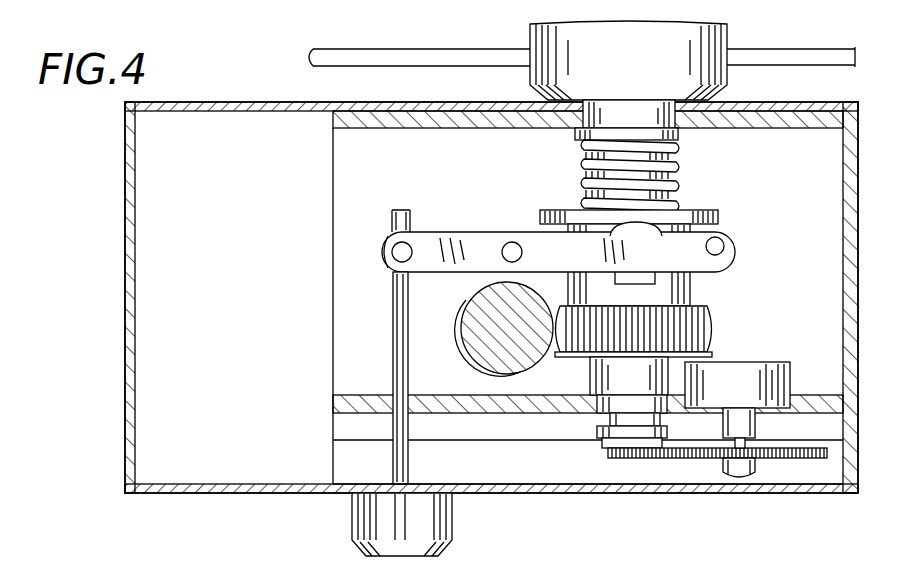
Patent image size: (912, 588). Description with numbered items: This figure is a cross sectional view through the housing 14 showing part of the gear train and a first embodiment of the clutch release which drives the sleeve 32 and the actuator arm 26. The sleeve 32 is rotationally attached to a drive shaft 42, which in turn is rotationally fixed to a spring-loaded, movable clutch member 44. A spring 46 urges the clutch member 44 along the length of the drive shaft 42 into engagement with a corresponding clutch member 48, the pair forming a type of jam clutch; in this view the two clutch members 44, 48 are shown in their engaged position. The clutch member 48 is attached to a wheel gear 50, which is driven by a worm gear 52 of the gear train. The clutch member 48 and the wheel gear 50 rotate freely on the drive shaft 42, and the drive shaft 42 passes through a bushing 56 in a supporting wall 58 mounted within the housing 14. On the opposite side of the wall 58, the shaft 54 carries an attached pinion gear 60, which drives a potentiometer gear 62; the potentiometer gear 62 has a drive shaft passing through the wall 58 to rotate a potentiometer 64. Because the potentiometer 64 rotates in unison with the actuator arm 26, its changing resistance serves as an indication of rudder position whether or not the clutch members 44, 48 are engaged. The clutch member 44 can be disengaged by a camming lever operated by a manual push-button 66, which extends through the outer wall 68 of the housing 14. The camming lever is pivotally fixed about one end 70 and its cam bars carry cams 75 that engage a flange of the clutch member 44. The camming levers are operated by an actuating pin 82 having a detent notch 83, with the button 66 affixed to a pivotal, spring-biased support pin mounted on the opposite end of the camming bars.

The housing 14 is at (742, 495).
The actuator arm 26 is at (400, 50).
The sleeve 32 is at (727, 36).
The drive shaft 42 is at (683, 118).
The clutch member 44 is at (706, 217).
The spring 46 is at (682, 160).
The clutch member 48 is at (692, 288).
The wheel gear 50 is at (714, 326).
The worm gear 52 is at (468, 344).
The shaft 54 is at (590, 378).
The bushing 56 is at (600, 420).
The supporting wall 58 is at (446, 441).
The pinion gear 60 is at (606, 454).
The potentiometer gear 62 is at (786, 462).
The potentiometer 64 is at (776, 364).
The push-button 66 is at (452, 526).
The outer wall 68 is at (604, 494).
The end 70 is at (725, 246).
The cam 75 is at (656, 238).
The actuating pin 82 is at (412, 290).
The detent notch 83 is at (410, 460).